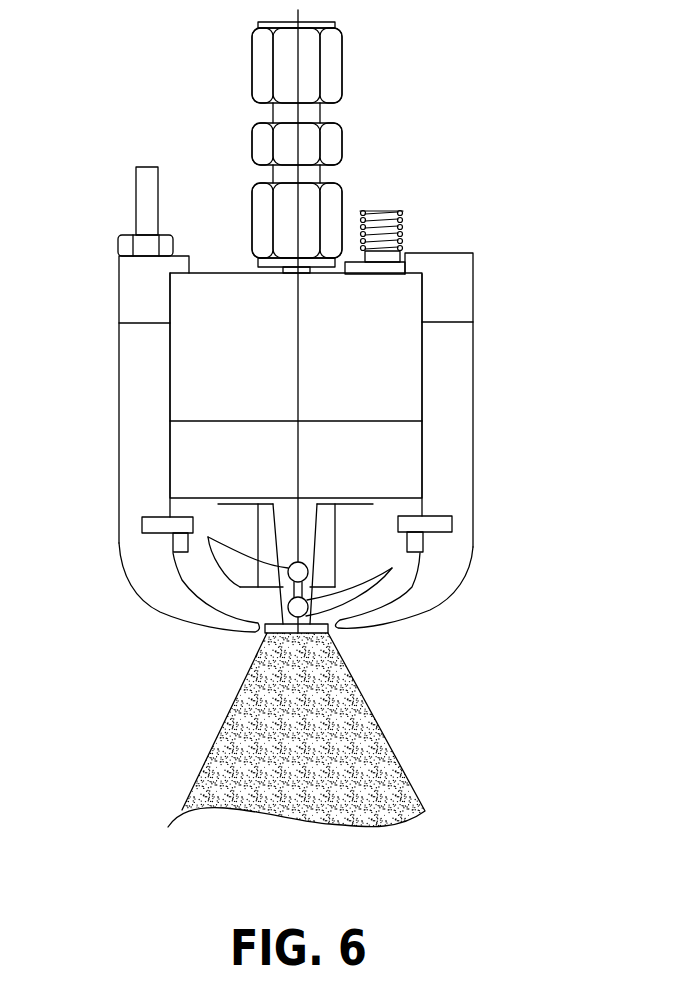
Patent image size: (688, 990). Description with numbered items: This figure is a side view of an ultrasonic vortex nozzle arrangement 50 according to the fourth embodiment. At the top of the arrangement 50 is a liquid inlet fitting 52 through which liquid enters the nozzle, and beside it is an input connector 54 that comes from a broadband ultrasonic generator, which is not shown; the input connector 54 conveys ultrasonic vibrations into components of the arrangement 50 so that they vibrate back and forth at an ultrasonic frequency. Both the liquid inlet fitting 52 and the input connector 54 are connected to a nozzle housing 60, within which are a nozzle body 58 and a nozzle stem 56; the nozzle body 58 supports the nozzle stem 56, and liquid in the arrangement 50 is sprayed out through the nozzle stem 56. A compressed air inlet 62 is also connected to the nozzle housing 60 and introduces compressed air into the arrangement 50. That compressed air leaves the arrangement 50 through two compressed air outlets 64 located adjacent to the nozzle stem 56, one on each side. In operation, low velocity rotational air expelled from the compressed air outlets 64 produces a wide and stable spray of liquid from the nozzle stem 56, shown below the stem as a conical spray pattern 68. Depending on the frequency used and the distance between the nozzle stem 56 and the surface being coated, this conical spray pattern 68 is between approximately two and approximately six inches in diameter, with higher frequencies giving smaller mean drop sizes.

The ultrasonic vortex nozzle arrangement 50 is at (627, 663).
The liquid inlet fitting 52 is at (328, 206).
The input connector 54 is at (256, 70).
The nozzle stem 56 is at (317, 543).
The nozzle body 58 is at (402, 462).
The nozzle housing 60 is at (128, 398).
The compressed air inlet 62 is at (139, 189).
The compressed air outlets 64 is at (172, 543).
The conical spray pattern 68 is at (392, 793).